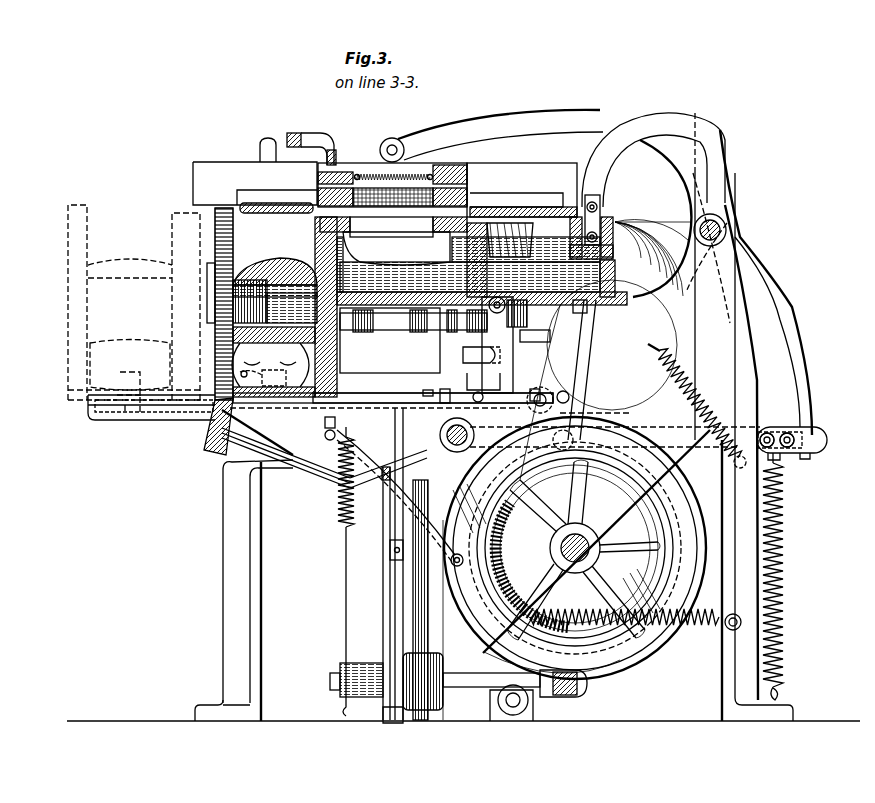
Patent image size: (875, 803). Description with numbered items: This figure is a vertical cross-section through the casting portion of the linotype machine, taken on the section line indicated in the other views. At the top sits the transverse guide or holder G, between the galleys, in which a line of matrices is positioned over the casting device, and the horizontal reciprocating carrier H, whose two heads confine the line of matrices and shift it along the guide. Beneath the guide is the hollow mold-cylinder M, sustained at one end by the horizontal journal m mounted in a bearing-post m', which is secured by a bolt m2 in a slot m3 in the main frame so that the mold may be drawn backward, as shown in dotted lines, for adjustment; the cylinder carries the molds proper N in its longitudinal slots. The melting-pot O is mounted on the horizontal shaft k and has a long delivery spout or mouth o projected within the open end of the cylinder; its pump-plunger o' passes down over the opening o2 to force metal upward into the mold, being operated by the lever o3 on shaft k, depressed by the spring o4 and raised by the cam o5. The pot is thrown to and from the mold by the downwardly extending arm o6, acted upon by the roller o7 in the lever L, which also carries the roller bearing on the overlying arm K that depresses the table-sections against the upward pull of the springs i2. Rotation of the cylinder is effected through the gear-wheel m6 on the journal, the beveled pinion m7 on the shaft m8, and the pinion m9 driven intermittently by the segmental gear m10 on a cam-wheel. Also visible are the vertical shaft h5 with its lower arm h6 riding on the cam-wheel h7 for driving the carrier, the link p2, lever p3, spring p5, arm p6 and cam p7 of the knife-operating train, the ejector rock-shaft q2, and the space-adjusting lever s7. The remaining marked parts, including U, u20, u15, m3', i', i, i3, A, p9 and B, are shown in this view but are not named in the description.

The horizontal reciprocating carrier H is at (338, 172).
The transverse guide or holder G is at (367, 163).
The lever L is at (405, 176).
The overlying arm K is at (560, 108).
The lever o3 is at (653, 159).
The pump-plunger o' is at (601, 219).
The melting-pot O is at (630, 231).
The opening o2 is at (618, 258).
The horizontal axis or shaft k is at (728, 234).
The molds proper N is at (399, 310).
The delivery spout or mouth o is at (396, 248).
The rack U is at (258, 225).
The hollow mold-cylinder M is at (317, 249).
The horizontal journal m is at (255, 228).
The gear-wheel m6 is at (214, 349).
The bearing-post m' is at (270, 365).
The bolt m2 is at (278, 379).
The slot m3 is at (151, 423).
The beveled pinion m7 is at (208, 449).
The shaft m8 is at (311, 466).
The spring u20 is at (338, 517).
The lever u15 is at (340, 432).
The bar m3' is at (433, 399).
The rock-shaft q2 is at (397, 322).
The link p2 is at (553, 312).
The lever p3 is at (590, 360).
The cam o5 is at (697, 406).
The spring o4 is at (593, 407).
The pulley i' is at (464, 435).
The springs i2 is at (595, 410).
The arm o6 is at (746, 355).
The roller o7 is at (768, 430).
The roller i is at (786, 422).
The spring i3 is at (783, 640).
The frame A is at (260, 580).
The lever s7 is at (383, 594).
The vertical shaft h5 is at (410, 623).
The arm h6 is at (480, 688).
The arm p6 is at (490, 663).
The roller p9 is at (513, 706).
The cam p7 is at (607, 680).
The cam-wheel h7 is at (644, 666).
The wheel B is at (575, 548).
The pinion m9 is at (560, 512).
The segmental gear m10 is at (563, 576).
The spring p5 is at (710, 630).